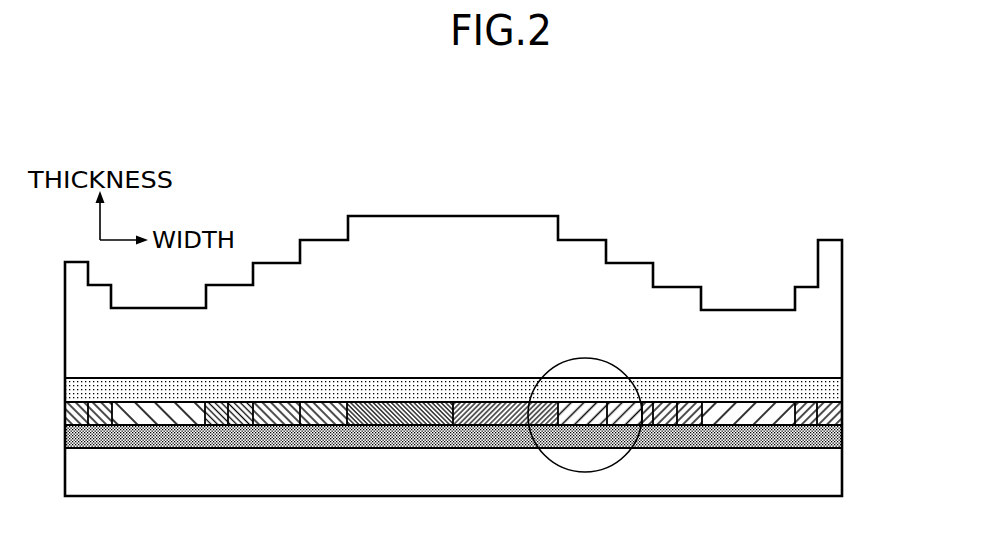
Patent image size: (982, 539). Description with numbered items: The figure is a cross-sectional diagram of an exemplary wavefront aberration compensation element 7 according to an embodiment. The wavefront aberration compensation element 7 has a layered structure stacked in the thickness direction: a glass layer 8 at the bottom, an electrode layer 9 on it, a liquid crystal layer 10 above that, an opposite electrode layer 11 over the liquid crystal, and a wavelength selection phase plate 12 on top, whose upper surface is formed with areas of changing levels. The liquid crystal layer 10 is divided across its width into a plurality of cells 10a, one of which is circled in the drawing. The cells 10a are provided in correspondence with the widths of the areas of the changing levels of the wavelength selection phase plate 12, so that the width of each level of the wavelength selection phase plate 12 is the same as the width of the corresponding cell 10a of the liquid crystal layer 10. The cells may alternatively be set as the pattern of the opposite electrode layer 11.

The wavefront aberration compensation element 7 is at (712, 195).
The glass layer 8 is at (853, 449).
The electrode layer 9 is at (842, 440).
The liquid crystal layer 10 is at (842, 420).
The cell 10a is at (583, 400).
The opposite electrode layer 11 is at (842, 393).
The wavelength selection phase plate 12 is at (853, 241).